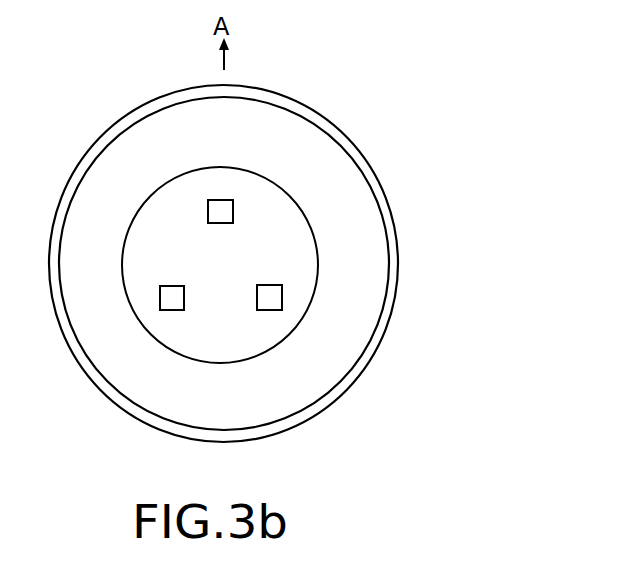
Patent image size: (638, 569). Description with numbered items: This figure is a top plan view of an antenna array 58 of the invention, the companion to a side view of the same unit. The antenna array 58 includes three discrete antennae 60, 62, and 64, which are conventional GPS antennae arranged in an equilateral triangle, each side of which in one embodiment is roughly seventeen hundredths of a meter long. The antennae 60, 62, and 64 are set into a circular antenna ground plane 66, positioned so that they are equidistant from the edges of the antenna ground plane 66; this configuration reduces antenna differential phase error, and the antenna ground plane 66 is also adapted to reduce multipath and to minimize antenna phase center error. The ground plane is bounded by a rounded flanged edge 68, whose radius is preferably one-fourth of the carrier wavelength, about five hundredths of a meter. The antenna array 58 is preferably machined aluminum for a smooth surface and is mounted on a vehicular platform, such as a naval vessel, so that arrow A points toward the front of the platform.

The antenna array 58 is at (396, 144).
The discrete antenna 60 is at (170, 298).
The discrete antenna 62 is at (227, 208).
The discrete antenna 64 is at (273, 300).
The antenna ground plane 66 is at (230, 345).
The rounded flanged edge 68 is at (302, 418).